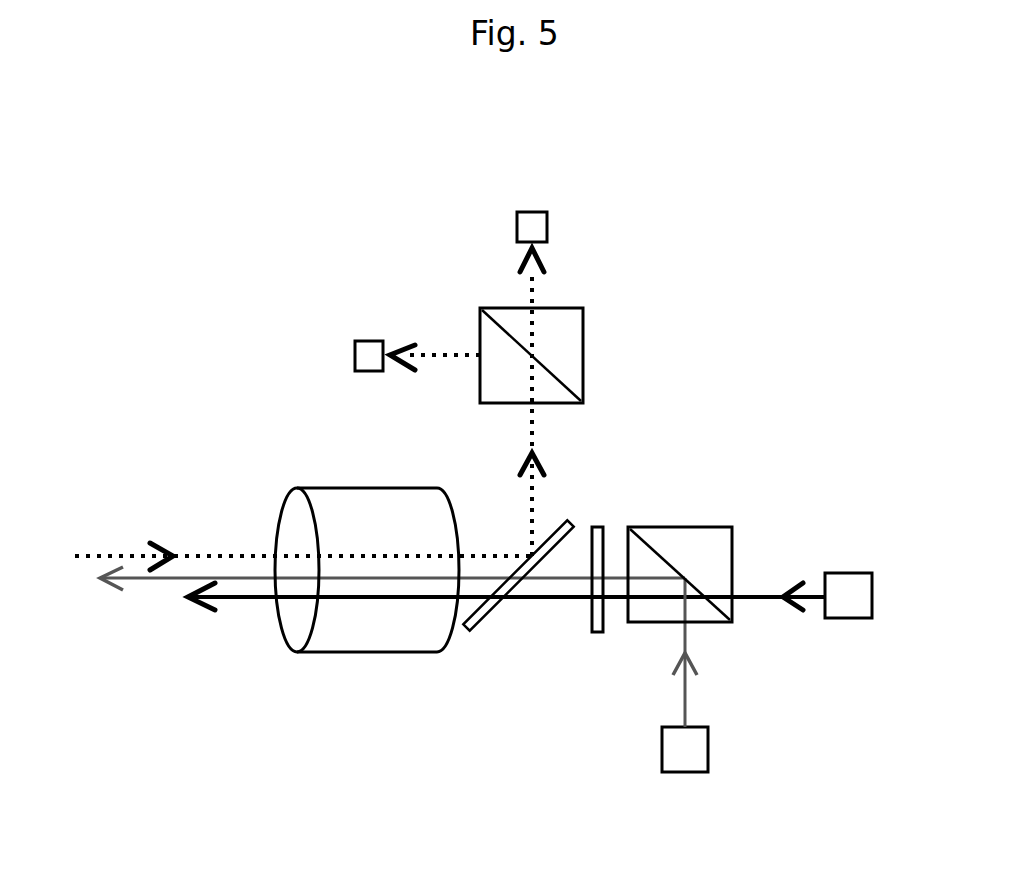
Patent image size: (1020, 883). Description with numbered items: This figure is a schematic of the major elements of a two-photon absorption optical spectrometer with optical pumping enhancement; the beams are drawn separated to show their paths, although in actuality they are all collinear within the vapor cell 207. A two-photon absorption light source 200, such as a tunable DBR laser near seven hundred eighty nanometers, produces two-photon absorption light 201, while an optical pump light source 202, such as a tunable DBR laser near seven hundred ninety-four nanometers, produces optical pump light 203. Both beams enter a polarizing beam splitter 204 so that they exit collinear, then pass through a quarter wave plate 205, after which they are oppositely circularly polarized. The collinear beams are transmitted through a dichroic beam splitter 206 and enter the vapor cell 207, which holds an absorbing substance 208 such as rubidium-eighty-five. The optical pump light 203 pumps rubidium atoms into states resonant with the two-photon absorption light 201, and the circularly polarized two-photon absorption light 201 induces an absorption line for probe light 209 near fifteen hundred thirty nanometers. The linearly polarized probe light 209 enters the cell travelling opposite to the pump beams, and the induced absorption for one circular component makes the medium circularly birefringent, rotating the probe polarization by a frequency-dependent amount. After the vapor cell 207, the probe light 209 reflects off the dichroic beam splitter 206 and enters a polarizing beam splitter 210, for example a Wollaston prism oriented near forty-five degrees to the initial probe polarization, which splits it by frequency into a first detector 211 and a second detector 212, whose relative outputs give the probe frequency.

The two-photon absorption light source 200 is at (845, 570).
The two-photon absorption light 201 is at (780, 583).
The optical pump light source 202 is at (718, 750).
The optical pump light 203 is at (700, 688).
The polarizing beam splitter 204 is at (680, 523).
The quarter wave plate 205 is at (600, 523).
The dichroic beam splitter 206 is at (490, 622).
The vapor cell 207 is at (432, 658).
The absorbing substance 208 is at (348, 632).
The probe light 209 is at (200, 545).
The polarizing beam splitter 210 is at (587, 360).
The first detector 211 is at (557, 226).
The second detector 212 is at (370, 335).